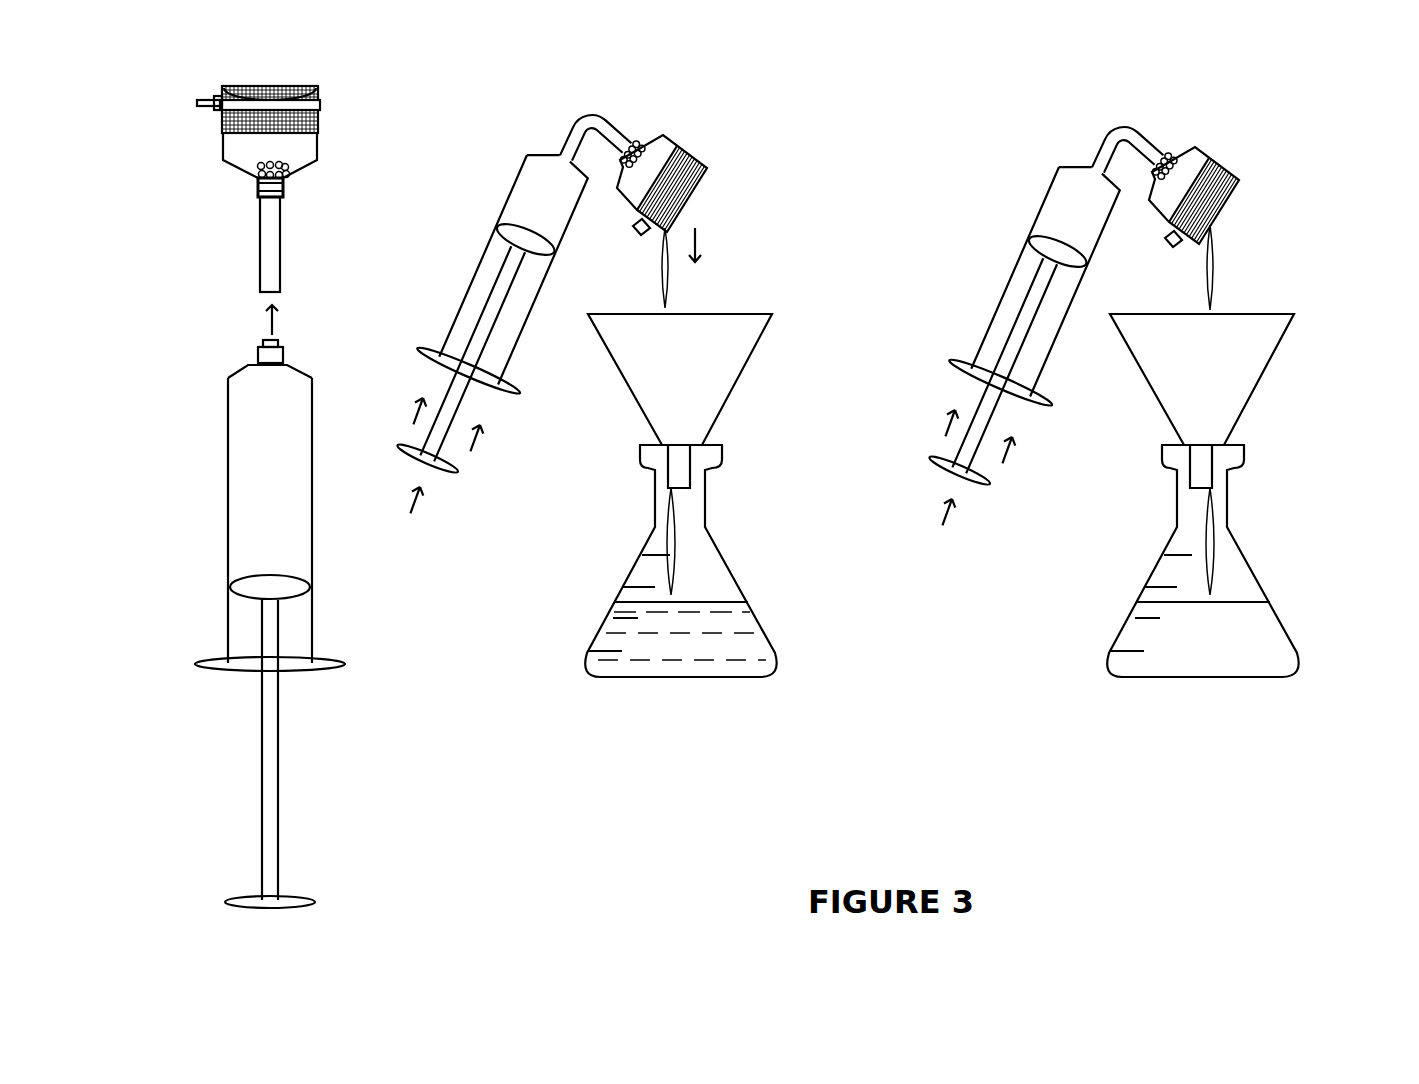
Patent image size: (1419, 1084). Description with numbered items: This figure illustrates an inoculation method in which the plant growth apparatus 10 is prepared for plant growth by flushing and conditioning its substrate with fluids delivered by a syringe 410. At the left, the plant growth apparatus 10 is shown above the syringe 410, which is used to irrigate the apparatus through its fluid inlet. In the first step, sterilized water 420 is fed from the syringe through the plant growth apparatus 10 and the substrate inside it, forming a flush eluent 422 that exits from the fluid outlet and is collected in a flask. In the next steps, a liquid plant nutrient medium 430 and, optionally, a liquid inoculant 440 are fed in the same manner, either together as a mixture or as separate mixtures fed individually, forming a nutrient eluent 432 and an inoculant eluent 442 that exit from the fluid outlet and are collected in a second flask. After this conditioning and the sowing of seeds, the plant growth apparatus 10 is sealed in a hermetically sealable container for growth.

The plant growth apparatus 10 is at (330, 140).
The syringe 410 is at (227, 628).
The sterilized water 420 is at (258, 403).
The flush eluent 422 is at (743, 643).
The liquid plant nutrient medium 430 is at (1074, 324).
The liquid inoculant 440 is at (1057, 213).
The nutrient eluent 432 is at (1255, 561).
The inoculant eluent 442 is at (1265, 645).